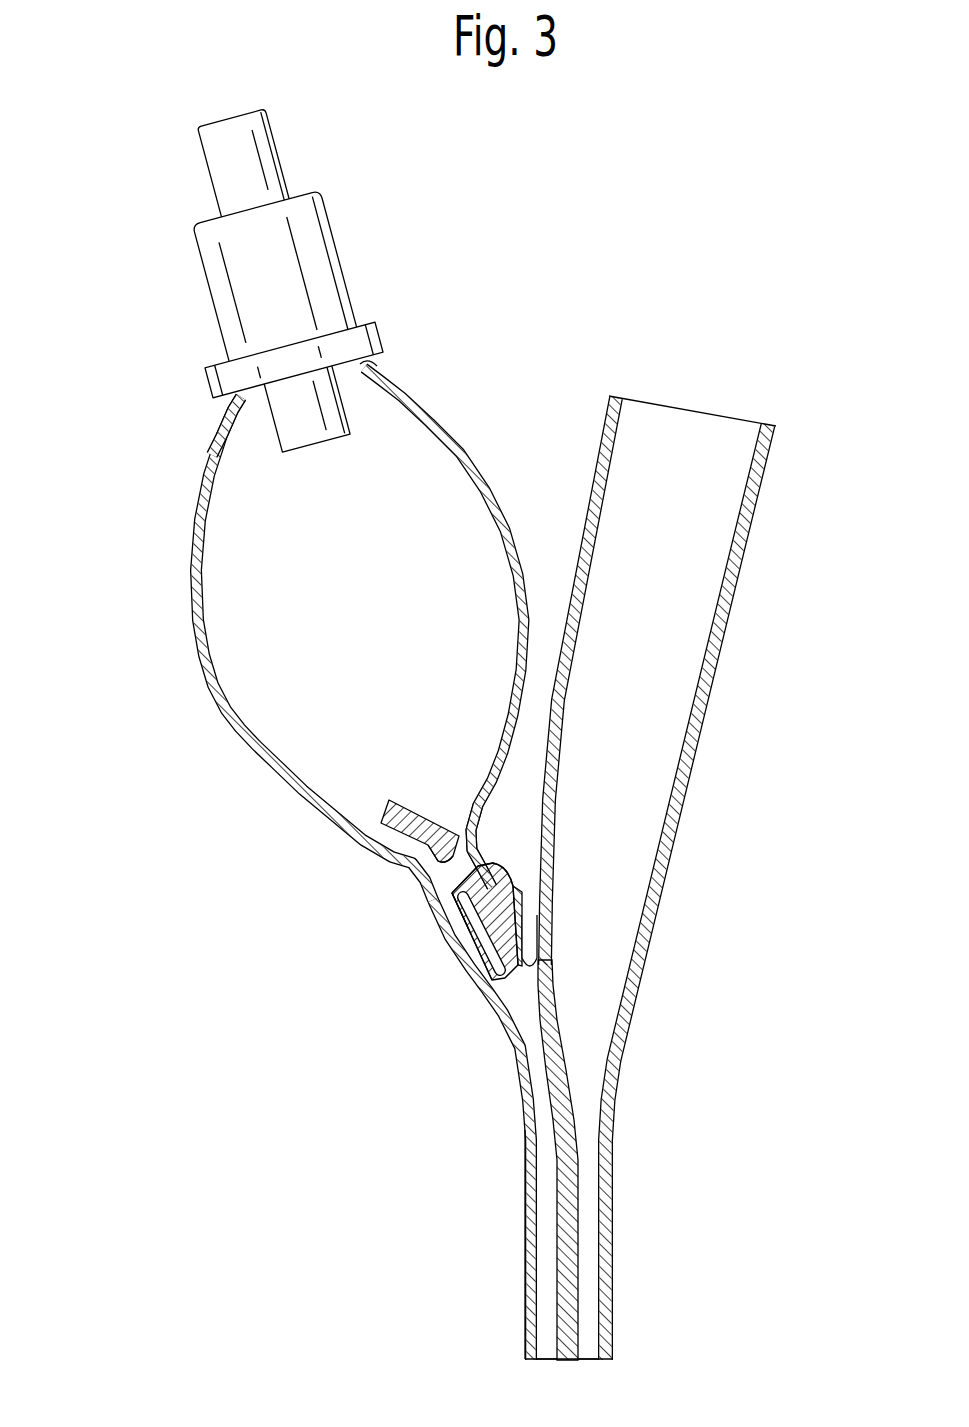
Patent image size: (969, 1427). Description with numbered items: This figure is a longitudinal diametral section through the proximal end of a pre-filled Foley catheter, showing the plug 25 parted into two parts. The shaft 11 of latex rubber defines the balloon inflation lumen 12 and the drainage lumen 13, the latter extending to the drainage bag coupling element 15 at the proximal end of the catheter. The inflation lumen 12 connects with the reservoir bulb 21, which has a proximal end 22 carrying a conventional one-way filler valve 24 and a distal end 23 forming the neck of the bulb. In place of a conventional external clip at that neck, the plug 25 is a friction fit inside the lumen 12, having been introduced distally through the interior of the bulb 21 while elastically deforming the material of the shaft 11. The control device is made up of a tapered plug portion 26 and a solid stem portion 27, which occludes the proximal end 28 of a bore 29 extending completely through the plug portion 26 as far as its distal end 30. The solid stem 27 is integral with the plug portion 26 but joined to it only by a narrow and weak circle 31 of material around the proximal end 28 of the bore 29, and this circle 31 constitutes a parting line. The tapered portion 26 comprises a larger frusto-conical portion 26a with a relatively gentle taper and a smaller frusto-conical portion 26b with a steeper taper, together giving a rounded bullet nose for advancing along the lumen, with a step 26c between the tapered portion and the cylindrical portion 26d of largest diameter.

The shaft 11 is at (525, 1332).
The balloon inflation lumen 12 is at (545, 1262).
The drainage lumen 13 is at (590, 1266).
The drainage bag coupling element 15 is at (750, 527).
The reservoir bulb 21 is at (192, 627).
The proximal end 22 is at (235, 405).
The distal end 23 is at (480, 840).
The one-way filler valve 24 is at (206, 264).
The plug 25 is at (509, 914).
The tapered plug portion 26 is at (522, 934).
The larger frusto-conical portion 26a is at (470, 950).
The smaller frusto-conical portion 26b is at (487, 988).
The step 26c is at (455, 925).
The cylindrical portion 26d is at (445, 912).
The solid stem portion 27 is at (393, 800).
The proximal end of the bore 28 is at (505, 870).
The bore 29 is at (532, 988).
The distal end of the bore 30 is at (490, 993).
The circle of material 31 is at (448, 858).